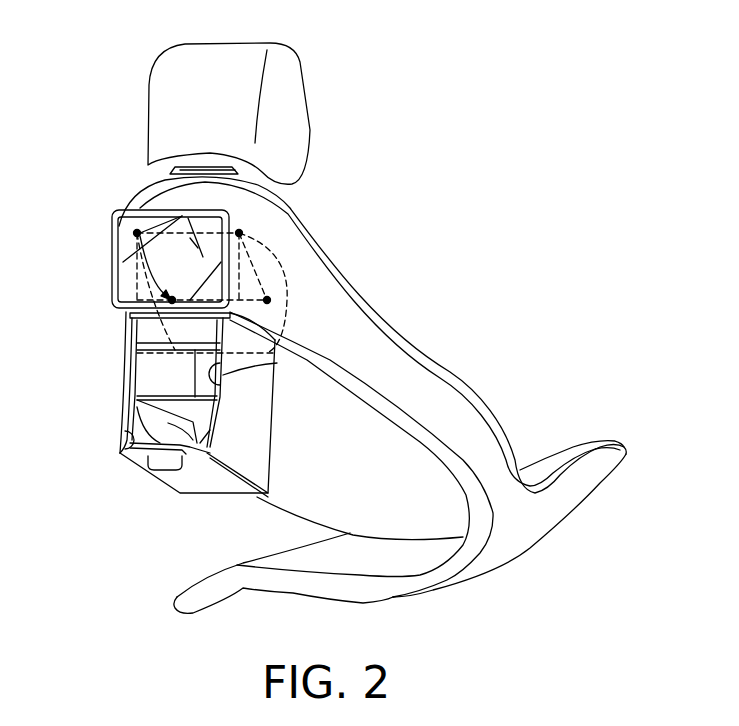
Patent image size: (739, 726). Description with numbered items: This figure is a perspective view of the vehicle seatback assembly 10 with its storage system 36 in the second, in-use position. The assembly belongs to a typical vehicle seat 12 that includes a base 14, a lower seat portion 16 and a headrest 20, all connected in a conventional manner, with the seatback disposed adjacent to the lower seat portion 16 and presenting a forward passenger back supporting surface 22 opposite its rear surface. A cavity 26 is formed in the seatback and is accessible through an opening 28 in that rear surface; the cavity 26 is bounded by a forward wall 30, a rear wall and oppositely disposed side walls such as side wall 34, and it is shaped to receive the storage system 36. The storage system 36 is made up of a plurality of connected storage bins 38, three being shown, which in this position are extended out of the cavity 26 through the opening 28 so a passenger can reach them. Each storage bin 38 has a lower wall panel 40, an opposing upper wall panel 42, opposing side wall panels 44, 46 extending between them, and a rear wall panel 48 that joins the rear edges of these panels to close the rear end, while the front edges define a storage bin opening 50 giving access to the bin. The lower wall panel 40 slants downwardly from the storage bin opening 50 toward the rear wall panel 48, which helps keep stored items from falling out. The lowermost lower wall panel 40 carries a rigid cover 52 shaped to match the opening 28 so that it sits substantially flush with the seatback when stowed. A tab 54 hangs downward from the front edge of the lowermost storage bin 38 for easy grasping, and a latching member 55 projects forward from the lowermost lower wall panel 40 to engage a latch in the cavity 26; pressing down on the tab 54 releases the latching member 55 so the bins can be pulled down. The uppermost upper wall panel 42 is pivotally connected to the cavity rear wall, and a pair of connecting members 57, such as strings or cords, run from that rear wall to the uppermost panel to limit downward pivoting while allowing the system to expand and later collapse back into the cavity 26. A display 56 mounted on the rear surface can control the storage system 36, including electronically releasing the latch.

The vehicle seatback assembly 10 is at (453, 248).
The vehicle seat 12 is at (306, 231).
The base 14 is at (307, 597).
The lower seat portion 16 is at (562, 447).
The headrest 20 is at (150, 90).
The passenger back supporting surface 22 is at (412, 338).
The cavity 26 is at (270, 284).
The opening 28 is at (265, 326).
The forward wall 30 is at (160, 213).
The side wall 34 is at (113, 296).
The storage system 36 is at (118, 438).
The storage bin 38 is at (127, 364).
The lower wall panel 40 is at (258, 478).
The upper wall panel 42 is at (134, 380).
The side wall panel 44 is at (253, 457).
The side wall panel 46 is at (171, 467).
The rear wall panel 48 is at (220, 430).
The storage bin opening 50 is at (125, 458).
The rigid cover 52 is at (220, 480).
The tab 54 is at (160, 472).
The latching member 55 is at (127, 410).
The display 56 is at (110, 243).
The connecting member 57 is at (114, 268).